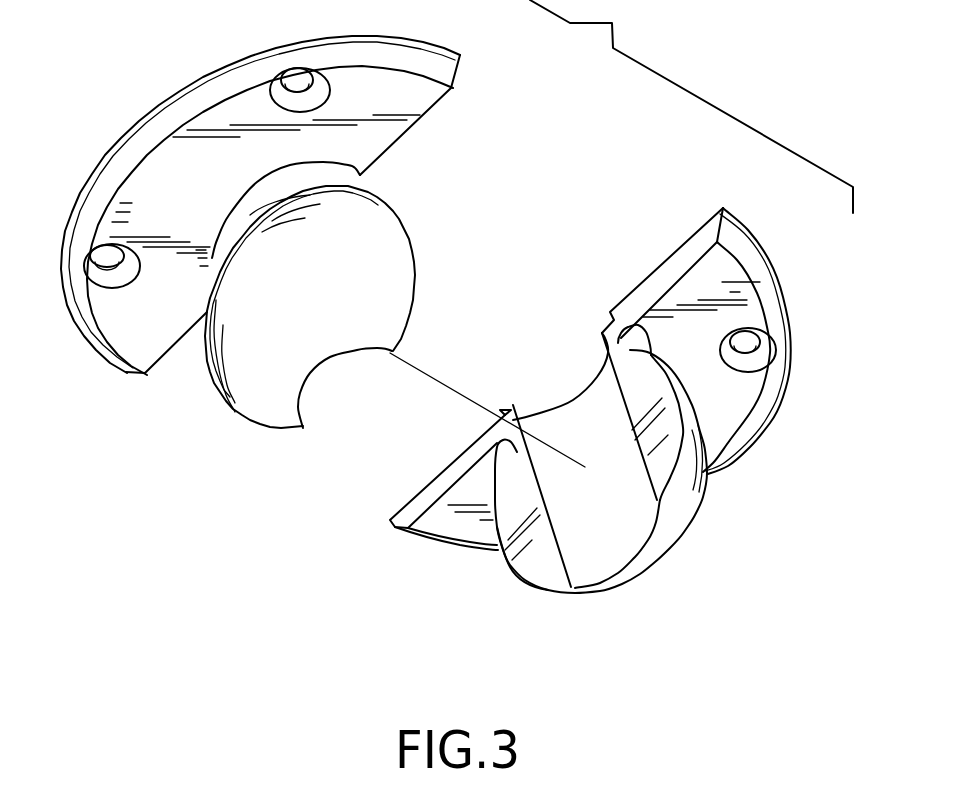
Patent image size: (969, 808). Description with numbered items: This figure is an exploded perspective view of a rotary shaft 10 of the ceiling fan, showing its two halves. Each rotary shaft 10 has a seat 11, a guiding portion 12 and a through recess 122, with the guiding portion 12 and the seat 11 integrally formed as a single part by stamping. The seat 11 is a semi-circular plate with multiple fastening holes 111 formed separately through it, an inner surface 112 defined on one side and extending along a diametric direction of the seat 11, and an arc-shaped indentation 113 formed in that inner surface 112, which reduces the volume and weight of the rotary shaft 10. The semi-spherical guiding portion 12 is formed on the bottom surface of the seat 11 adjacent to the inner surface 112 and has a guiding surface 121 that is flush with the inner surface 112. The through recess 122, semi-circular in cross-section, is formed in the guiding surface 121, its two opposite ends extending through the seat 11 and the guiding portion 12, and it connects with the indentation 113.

The rotary shaft 10 is at (130, 82).
The seat 11 is at (628, 379).
The fastening holes 111 is at (755, 340).
The inner surface 112 is at (665, 272).
The indentation 113 is at (511, 411).
The guiding portion 12 is at (610, 488).
The guiding surface 121 is at (547, 560).
The through recess 122 is at (617, 558).